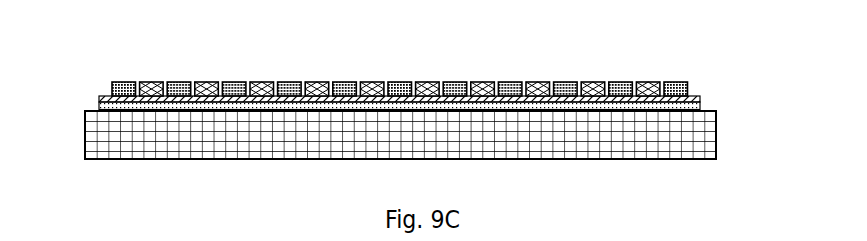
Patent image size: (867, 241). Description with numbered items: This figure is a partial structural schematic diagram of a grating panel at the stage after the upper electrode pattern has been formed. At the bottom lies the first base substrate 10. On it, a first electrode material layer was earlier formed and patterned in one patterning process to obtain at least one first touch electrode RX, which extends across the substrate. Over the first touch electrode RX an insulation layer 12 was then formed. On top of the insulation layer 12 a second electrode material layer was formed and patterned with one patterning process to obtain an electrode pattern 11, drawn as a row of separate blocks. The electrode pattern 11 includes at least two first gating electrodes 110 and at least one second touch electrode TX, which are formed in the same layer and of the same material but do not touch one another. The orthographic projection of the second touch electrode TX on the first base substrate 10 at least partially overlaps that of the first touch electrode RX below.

The first base substrate 10 is at (717, 138).
The electrode pattern 11 is at (477, 53).
The insulation layer 12 is at (704, 99).
The first gating electrode 110 is at (233, 70).
The second touch electrode TX is at (149, 70).
The first touch electrode RX is at (92, 103).